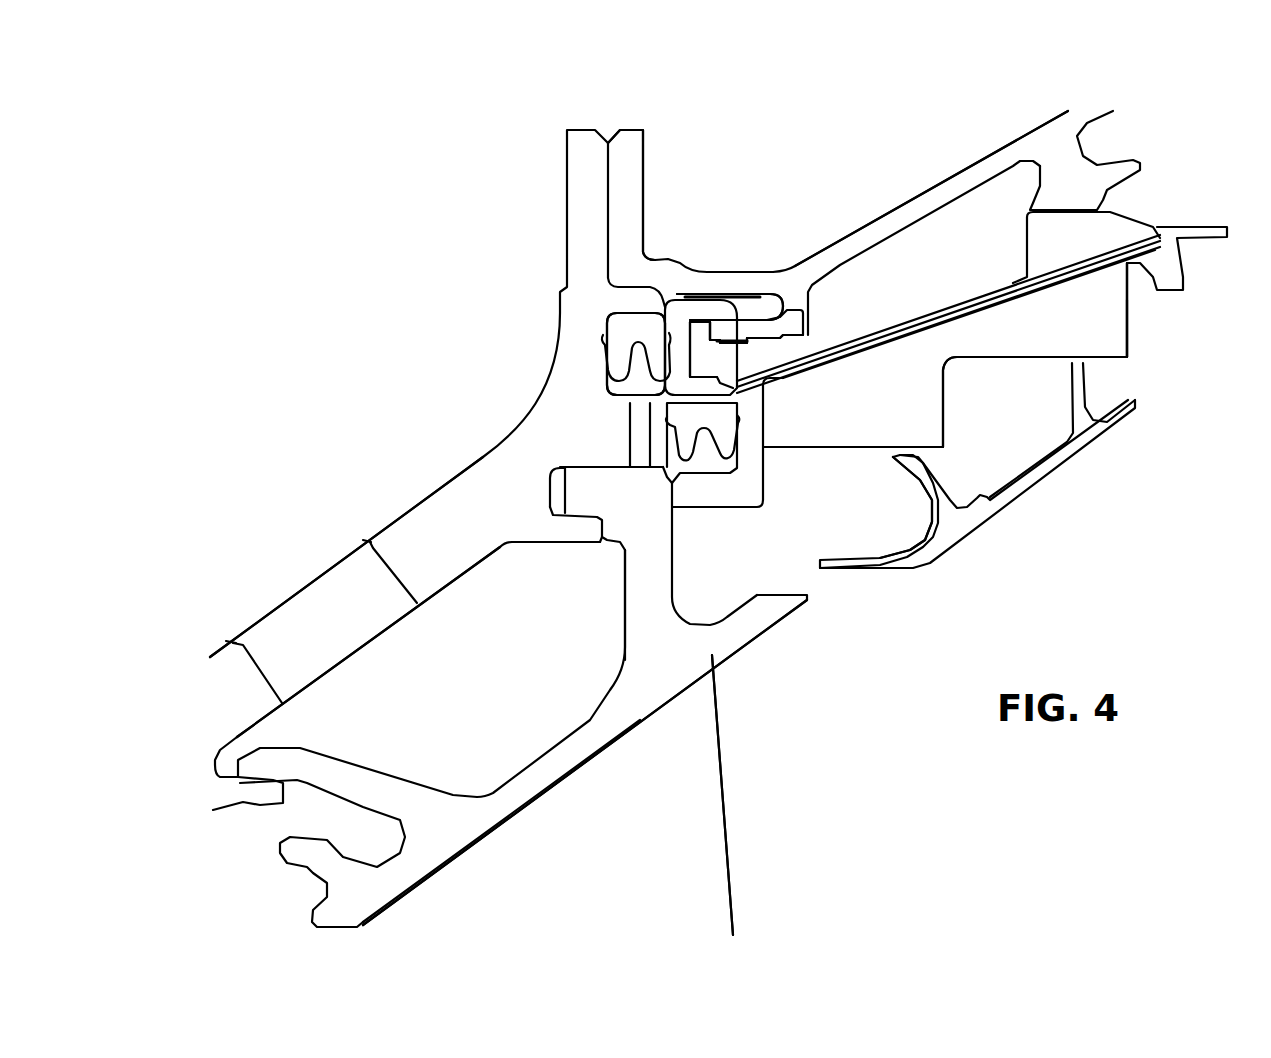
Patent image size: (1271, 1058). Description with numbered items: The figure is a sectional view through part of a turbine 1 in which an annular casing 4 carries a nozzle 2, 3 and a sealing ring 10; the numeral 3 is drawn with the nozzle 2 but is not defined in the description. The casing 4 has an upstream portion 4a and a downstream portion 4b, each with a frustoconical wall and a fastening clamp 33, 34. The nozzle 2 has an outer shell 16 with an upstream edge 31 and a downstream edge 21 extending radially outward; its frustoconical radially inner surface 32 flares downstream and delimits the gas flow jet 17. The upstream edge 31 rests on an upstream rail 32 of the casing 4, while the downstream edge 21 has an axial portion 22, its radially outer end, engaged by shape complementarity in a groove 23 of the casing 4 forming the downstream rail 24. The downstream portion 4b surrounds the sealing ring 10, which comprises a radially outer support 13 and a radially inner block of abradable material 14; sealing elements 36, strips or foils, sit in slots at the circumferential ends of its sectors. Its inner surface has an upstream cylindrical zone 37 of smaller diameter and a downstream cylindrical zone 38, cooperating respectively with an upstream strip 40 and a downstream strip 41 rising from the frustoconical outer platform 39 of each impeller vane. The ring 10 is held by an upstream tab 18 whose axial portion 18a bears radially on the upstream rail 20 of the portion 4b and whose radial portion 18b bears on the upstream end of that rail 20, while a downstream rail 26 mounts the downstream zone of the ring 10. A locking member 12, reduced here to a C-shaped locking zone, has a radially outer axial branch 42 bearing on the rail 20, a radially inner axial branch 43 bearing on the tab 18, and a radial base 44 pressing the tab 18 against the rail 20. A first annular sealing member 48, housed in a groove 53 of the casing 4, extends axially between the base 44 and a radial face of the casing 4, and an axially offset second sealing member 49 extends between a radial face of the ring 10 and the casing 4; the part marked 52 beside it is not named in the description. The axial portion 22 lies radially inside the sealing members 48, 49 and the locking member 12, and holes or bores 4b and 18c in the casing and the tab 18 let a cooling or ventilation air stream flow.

The turbine 1 is at (813, 110).
The nozzle 2 is at (692, 822).
The rotor disk 3 is at (692, 822).
The annular casing 4 is at (423, 530).
The upstream portion of the casing 4a is at (423, 530).
The downstream portion of the casing 4b is at (637, 433).
The sealing ring 10 is at (1000, 340).
The locking member 12 is at (730, 355).
The radially outer support 13 is at (1043, 263).
The block of abradable material 14 is at (1000, 340).
The outer shell 16 is at (553, 767).
The gas flow jet 17 is at (896, 758).
The upstream tab 18 is at (745, 333).
The axial portion of the tab 18a is at (745, 333).
The radial portion of the tab 18b is at (697, 333).
The holes or bores 18c is at (743, 368).
The upstream rail 20 is at (737, 360).
The downstream edge 21 is at (647, 555).
The axial portion of the downstream edge 22 is at (557, 488).
The groove 23 is at (592, 492).
The downstream rail 24 is at (560, 530).
The downstream rail 26 is at (1107, 173).
The upstream edge 31 is at (357, 783).
The radially inner surface 32 is at (260, 790).
The fastening clamp 33 is at (583, 182).
The fastening clamp 34 is at (625, 173).
The sealing elements 36 is at (900, 330).
The upstream cylindrical zone 37 is at (850, 448).
The downstream cylindrical zone 38 is at (1107, 353).
The outer platform 39 is at (980, 513).
The upstream strip 40 is at (932, 493).
The downstream strip 41 is at (1077, 407).
The radially outer axial branch 42 is at (730, 355).
The radially inner axial branch 43 is at (703, 388).
The radial base 44 is at (677, 355).
The first annular sealing member 48 is at (620, 363).
The second sealing member 49 is at (700, 450).
The lower block 52 is at (695, 497).
The groove 53 is at (633, 390).